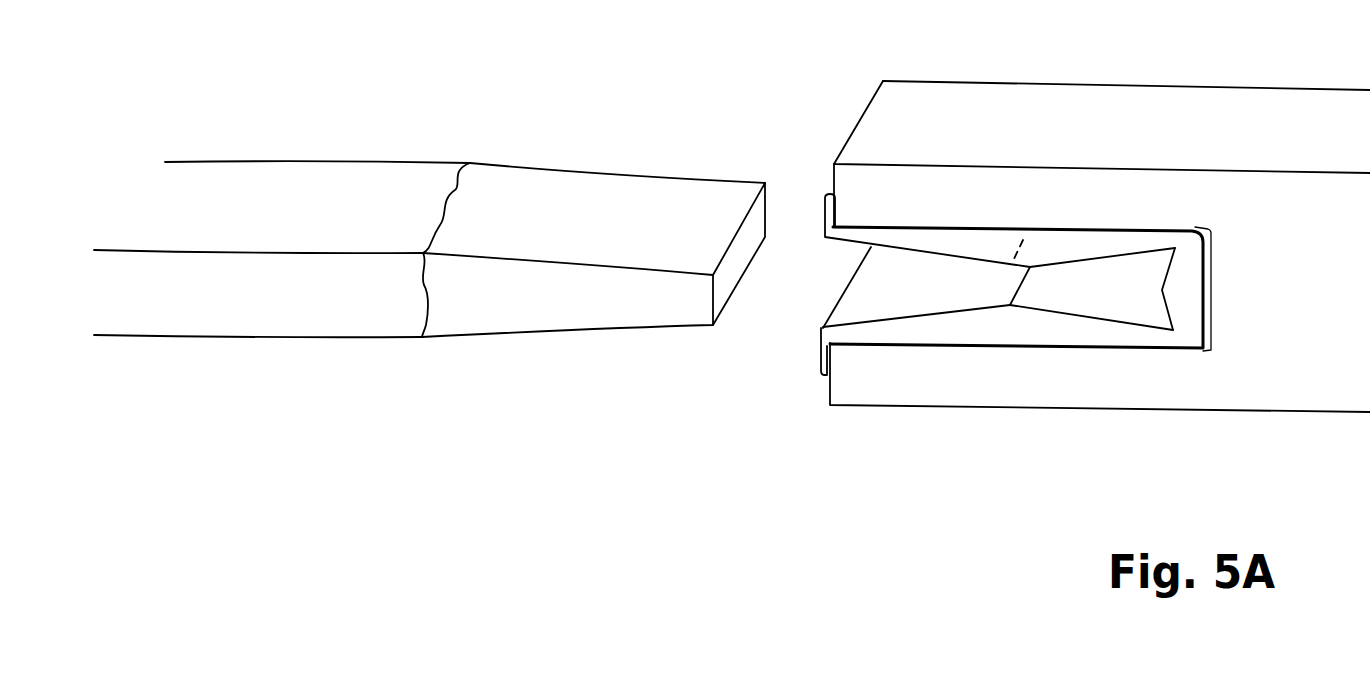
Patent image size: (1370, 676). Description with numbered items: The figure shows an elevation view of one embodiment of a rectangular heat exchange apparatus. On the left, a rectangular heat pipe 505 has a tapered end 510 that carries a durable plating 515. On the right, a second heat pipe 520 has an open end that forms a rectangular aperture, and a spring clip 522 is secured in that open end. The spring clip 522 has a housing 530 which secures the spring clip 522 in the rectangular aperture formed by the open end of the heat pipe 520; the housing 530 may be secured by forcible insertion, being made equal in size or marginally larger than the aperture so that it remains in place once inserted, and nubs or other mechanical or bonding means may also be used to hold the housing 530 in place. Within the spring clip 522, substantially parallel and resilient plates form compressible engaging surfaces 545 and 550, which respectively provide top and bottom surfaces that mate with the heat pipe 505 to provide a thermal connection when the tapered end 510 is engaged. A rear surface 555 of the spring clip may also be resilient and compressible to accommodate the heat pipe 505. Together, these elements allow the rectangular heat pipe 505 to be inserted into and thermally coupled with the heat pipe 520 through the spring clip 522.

The rectangular heat pipe 505 is at (298, 137).
The tapered end 510 is at (601, 225).
The durable plating 515 is at (522, 177).
The heat pipe 520 is at (1018, 98).
The spring clip 522 is at (810, 286).
The housing 530 is at (994, 317).
The compressible engaging surface 545 is at (1058, 263).
The compressible engaging surface 550 is at (1037, 305).
The rear surface 555 is at (1162, 290).